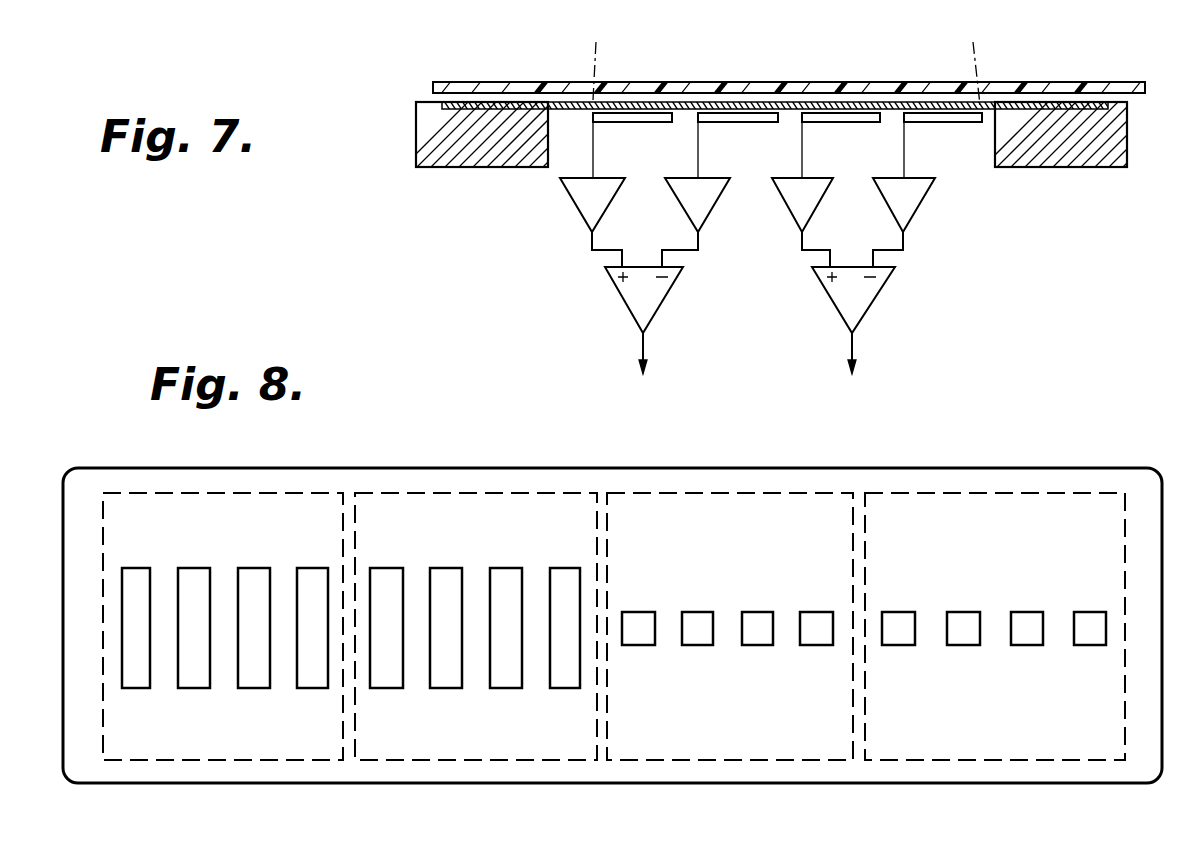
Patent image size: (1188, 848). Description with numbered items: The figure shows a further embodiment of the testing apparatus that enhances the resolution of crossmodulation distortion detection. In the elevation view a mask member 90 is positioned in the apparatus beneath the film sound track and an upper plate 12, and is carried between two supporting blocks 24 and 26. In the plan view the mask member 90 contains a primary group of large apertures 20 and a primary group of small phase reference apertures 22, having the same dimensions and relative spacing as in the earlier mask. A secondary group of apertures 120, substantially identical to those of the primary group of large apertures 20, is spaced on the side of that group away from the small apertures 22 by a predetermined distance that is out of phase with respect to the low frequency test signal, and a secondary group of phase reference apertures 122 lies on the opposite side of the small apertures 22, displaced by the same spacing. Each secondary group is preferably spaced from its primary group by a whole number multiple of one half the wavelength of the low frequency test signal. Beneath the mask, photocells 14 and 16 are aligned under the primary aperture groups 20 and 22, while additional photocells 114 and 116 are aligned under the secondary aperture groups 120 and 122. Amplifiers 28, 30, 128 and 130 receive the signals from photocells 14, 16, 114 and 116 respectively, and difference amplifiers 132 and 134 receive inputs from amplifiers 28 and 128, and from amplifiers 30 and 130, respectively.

In FIG. 7, the dielectric plate 12 is at (520, 82).
In FIG. 7, the mask member 90 is at (1043, 102).
In FIG. 8, the mask member 90 is at (1077, 480).
In FIG. 7, the left support block 24 is at (440, 148).
In FIG. 7, the right support block 26 is at (1082, 150).
In FIG. 7, the photocell 114 is at (648, 125).
In FIG. 8, the photocell 114 is at (223, 593).
In FIG. 7, the photocell 14 is at (754, 125).
In FIG. 8, the photocell 14 is at (476, 592).
In FIG. 7, the photocell 16 is at (860, 125).
In FIG. 8, the photocell 16 is at (730, 592).
In FIG. 7, the photocell 116 is at (961, 125).
In FIG. 8, the photocell 116 is at (995, 593).
In FIG. 7, the amplifier 128 is at (578, 205).
In FIG. 7, the amplifier 28 is at (690, 211).
In FIG. 7, the amplifier 30 is at (796, 204).
In FIG. 7, the amplifier 130 is at (912, 211).
In FIG. 7, the difference amplifier 132 is at (633, 304).
In FIG. 7, the difference amplifier 134 is at (870, 302).
In FIG. 8, the secondary group of apertures 120 is at (335, 693).
In FIG. 8, the primary group of large apertures 20 is at (590, 693).
In FIG. 8, the primary group of small apertures 22 is at (843, 649).
In FIG. 8, the secondary group of phase reference apertures 122 is at (1113, 649).